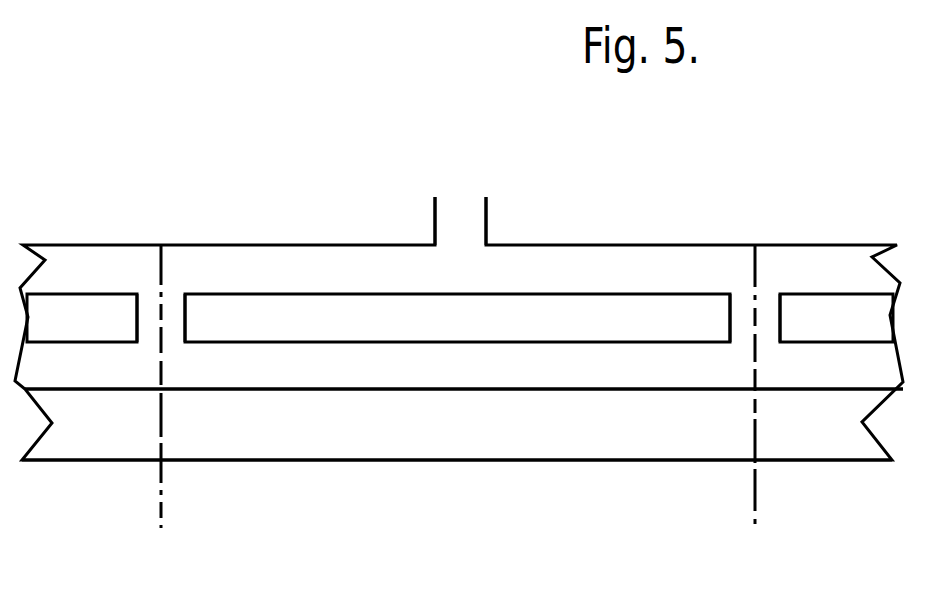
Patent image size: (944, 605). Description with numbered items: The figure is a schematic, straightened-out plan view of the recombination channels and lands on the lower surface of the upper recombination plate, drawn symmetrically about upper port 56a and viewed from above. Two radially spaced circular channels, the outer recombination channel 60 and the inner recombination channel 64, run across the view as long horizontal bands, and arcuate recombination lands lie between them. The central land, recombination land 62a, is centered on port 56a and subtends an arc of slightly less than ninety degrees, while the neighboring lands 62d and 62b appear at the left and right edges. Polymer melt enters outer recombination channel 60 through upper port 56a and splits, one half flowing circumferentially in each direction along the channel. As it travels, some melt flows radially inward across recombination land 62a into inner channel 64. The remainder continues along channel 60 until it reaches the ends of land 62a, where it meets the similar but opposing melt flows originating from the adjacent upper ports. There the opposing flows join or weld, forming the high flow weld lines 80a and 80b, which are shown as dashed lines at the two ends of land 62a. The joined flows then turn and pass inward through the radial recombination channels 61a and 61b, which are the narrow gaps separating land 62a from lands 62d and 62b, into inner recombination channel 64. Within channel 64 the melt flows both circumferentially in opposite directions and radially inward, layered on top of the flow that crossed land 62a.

The outer recombination channel 60 is at (262, 270).
The upper port 56a is at (458, 223).
The inner recombination channel 64 is at (248, 365).
The arcuate recombination land 62d is at (87, 317).
The arcuate recombination land 62a is at (360, 318).
The arcuate recombination land 62b is at (837, 313).
The radial recombination channel 61a is at (172, 312).
The radial recombination channel 61b is at (743, 313).
The high flow weld line 80a is at (159, 532).
The high flow weld line 80b is at (754, 532).